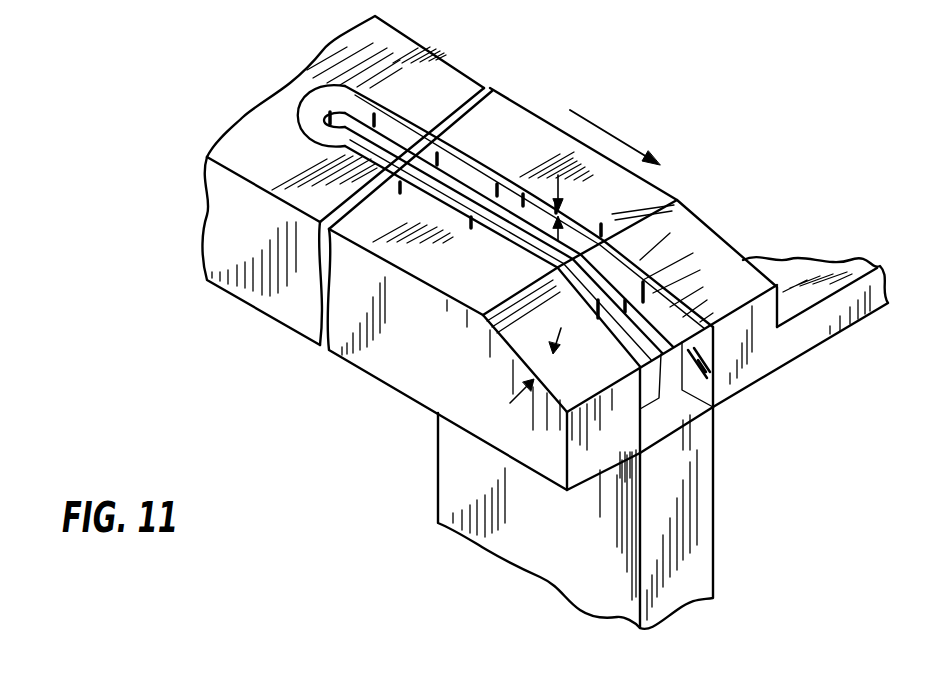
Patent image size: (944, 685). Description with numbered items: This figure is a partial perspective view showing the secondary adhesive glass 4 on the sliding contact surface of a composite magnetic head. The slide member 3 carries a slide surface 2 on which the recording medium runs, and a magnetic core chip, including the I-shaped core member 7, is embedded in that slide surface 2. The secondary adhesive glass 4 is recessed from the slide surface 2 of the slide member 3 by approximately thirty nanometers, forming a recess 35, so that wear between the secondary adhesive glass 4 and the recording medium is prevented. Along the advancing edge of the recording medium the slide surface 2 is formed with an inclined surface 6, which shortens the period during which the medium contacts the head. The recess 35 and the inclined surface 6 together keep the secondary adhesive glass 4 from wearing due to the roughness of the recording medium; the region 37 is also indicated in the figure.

The slide surface 2 is at (397, 57).
The slide member 3 is at (271, 306).
The secondary adhesive glass 4 is at (334, 100).
The inclined surface 6 is at (605, 372).
The I-shaped core member 7 is at (448, 468).
The recess 35 is at (560, 214).
The channel outlet 37 is at (547, 364).